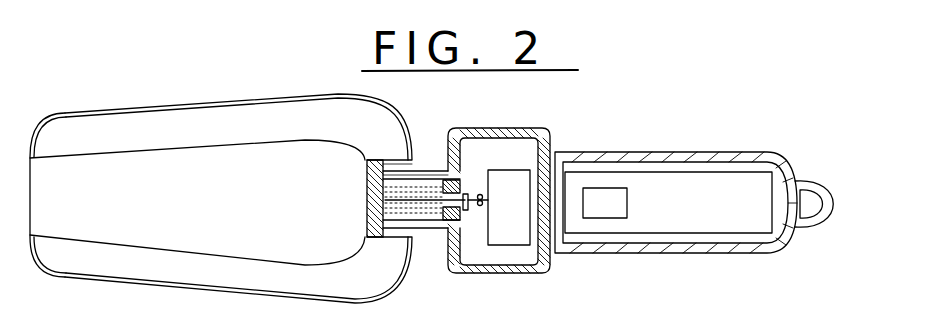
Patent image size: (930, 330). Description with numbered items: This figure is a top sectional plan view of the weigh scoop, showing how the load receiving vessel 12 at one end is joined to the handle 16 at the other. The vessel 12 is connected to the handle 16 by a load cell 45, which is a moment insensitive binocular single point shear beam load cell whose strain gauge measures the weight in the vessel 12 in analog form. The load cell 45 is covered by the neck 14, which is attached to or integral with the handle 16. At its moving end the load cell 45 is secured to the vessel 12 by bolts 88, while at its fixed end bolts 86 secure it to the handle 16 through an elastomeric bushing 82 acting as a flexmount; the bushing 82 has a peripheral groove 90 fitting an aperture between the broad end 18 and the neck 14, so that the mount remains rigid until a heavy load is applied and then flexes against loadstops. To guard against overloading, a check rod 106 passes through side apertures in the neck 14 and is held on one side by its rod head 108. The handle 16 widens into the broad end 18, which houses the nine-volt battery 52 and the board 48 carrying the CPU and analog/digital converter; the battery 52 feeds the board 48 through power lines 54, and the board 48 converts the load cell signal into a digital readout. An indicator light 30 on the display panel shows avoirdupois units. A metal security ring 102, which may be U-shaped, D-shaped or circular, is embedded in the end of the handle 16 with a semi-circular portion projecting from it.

The load receiving vessel 12 is at (174, 223).
The neck 14 is at (421, 230).
The handle 16 is at (612, 258).
The broad end 18 is at (480, 277).
The indicator/annunciator light 30 is at (615, 216).
The load cell 45 is at (408, 205).
The board 48 is at (692, 215).
The battery 52 is at (500, 224).
The power lines 54 is at (463, 229).
The elastomeric bushing 82 is at (463, 190).
The bolts 86 is at (478, 204).
The bolts 88 is at (366, 199).
The peripheral groove 90 is at (459, 185).
The security ring 102 is at (812, 178).
The check rod 106 is at (383, 179).
The rod head 108 is at (388, 172).